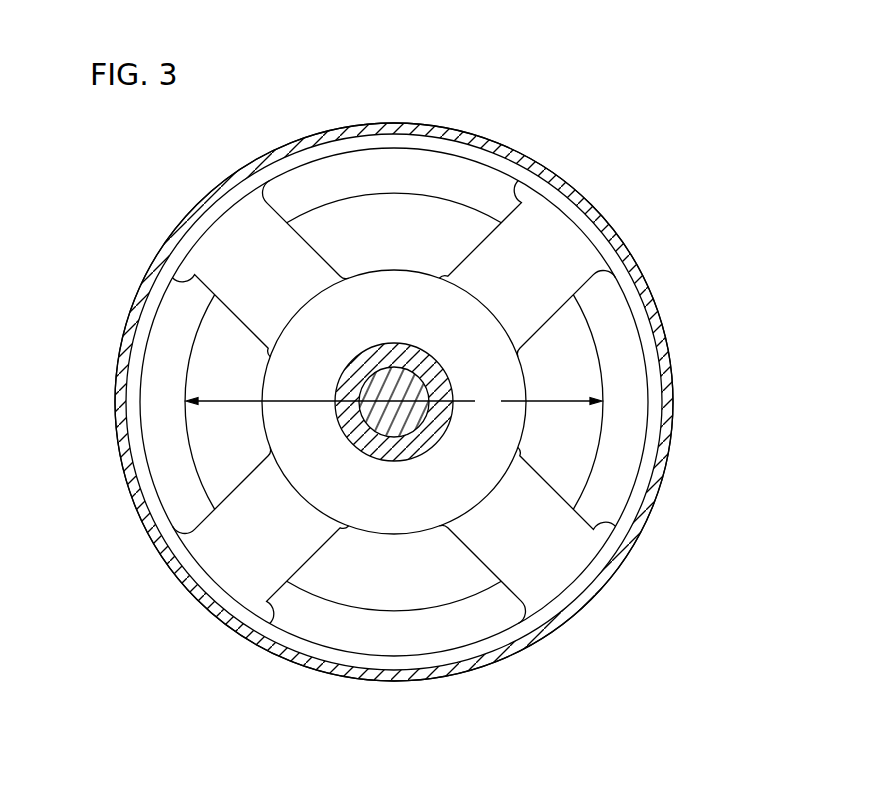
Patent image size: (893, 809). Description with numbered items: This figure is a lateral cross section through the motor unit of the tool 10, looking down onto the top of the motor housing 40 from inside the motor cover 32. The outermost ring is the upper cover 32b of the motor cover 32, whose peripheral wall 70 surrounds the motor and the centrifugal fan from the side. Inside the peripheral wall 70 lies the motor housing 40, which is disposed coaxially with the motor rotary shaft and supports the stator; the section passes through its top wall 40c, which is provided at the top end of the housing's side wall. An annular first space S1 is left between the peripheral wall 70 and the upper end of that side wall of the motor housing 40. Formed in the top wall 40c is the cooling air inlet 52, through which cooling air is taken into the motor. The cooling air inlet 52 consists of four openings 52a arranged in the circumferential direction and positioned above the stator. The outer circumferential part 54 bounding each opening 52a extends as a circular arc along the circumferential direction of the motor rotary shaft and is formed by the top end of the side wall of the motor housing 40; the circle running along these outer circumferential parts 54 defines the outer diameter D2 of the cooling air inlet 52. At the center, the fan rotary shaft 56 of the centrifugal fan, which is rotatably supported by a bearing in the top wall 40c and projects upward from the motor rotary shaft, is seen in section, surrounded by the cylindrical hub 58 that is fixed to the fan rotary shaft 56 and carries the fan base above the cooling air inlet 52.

The bearing device 10 is at (141, 131).
The motor cover 32 is at (232, 158).
The upper cover 32b is at (168, 237).
The peripheral wall 70 is at (578, 193).
The first space S1 is at (135, 413).
The motor housing 40 is at (615, 480).
The top wall 40c is at (565, 550).
The cooling air inlet 52 is at (392, 406).
The opening 52a is at (428, 213).
The outer circumferential part 54 is at (361, 198).
The fan rotary shaft 56 is at (398, 377).
The hub 58 is at (427, 365).
The outer diameter of the cooling air inlet D2 is at (394, 401).